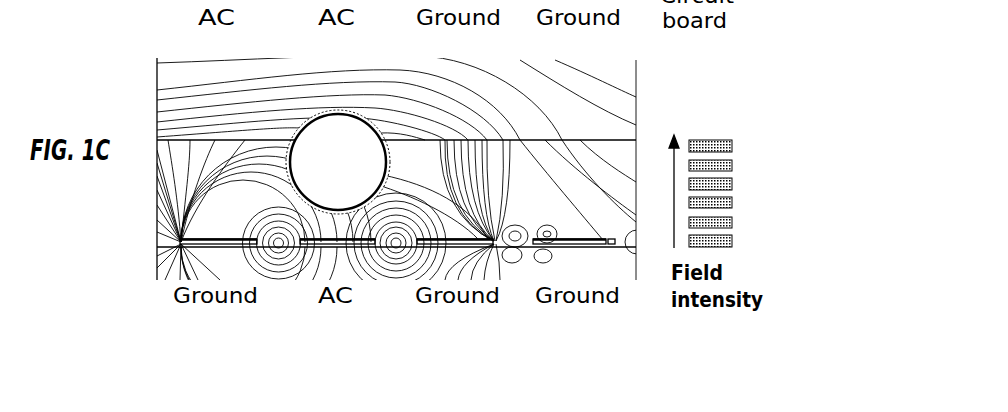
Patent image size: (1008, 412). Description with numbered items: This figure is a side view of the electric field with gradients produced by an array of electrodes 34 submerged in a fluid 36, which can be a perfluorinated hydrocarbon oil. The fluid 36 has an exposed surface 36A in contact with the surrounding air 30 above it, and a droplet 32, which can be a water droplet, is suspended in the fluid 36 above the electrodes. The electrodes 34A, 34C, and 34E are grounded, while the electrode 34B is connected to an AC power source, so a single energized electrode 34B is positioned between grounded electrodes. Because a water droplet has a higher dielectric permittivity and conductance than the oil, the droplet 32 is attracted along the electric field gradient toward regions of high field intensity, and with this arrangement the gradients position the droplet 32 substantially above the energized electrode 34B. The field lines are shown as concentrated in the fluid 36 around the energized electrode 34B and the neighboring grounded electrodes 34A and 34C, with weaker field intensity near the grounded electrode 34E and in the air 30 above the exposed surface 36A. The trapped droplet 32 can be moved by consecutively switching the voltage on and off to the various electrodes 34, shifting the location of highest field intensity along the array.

The surrounding air 30 is at (599, 103).
The droplet 32 is at (330, 140).
The electrodes 34 is at (598, 248).
The grounded electrode 34A is at (205, 237).
The energized electrode 34B is at (312, 248).
The grounded electrode 34C is at (423, 248).
The grounded electrode 34E is at (547, 248).
The fluid 36 is at (618, 191).
The exposed surface 36A is at (517, 140).